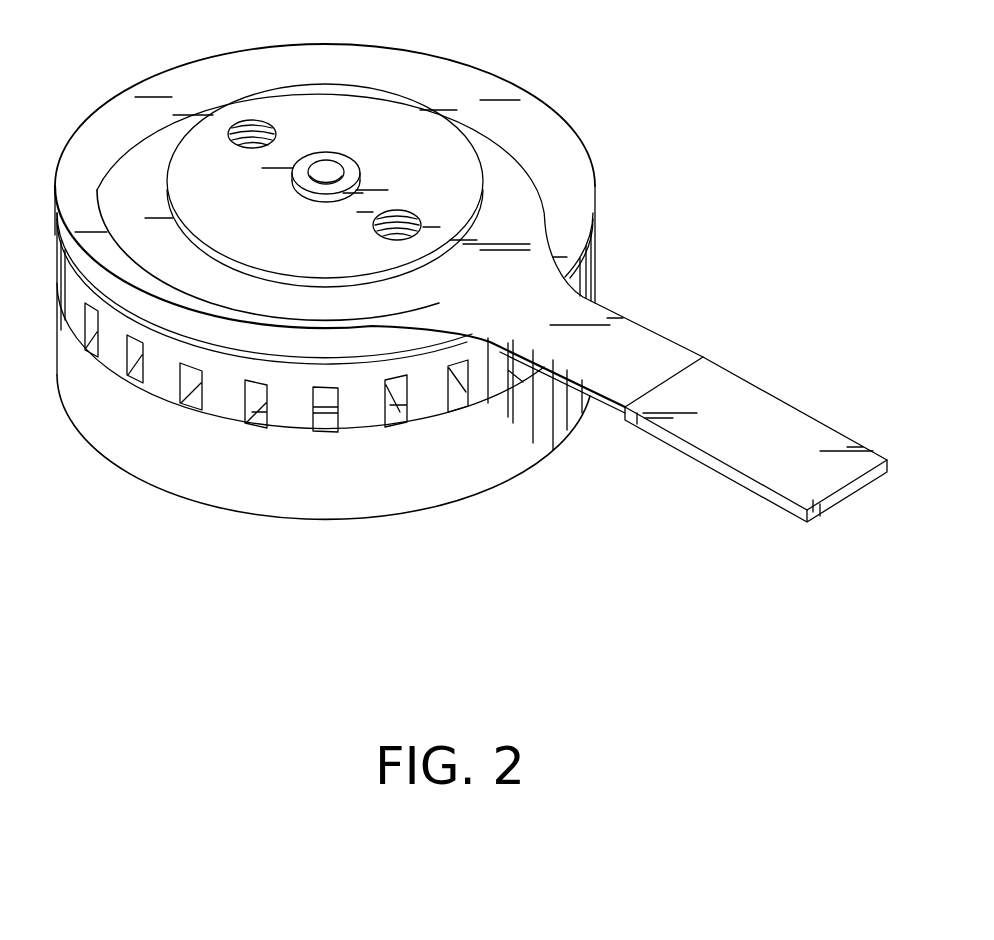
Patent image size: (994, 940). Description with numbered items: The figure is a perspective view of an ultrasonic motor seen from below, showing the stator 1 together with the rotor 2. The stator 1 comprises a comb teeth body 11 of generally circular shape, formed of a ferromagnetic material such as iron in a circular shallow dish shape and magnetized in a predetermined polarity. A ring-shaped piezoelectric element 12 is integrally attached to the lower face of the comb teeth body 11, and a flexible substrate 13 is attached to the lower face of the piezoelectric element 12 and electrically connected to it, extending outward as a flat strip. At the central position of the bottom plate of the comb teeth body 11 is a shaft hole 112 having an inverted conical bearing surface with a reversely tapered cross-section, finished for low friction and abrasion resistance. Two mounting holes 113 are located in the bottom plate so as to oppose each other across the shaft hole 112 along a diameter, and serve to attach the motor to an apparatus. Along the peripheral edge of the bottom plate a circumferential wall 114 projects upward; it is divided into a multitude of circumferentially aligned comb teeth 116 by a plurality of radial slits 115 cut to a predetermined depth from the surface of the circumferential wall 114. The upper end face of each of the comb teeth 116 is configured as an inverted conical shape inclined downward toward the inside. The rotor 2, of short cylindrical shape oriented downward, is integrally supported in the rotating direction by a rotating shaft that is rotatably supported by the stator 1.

The stator 1 is at (596, 198).
The rotor 2 is at (317, 497).
The comb teeth body 11 is at (295, 105).
The piezoelectric element 12 is at (317, 342).
The flexible substrate 13 is at (642, 343).
The shaft hole 112 is at (373, 130).
The mounting holes 113 is at (255, 147).
The circumferential wall 114 is at (480, 383).
The radial slits 115 is at (397, 403).
The comb teeth 116 is at (160, 378).